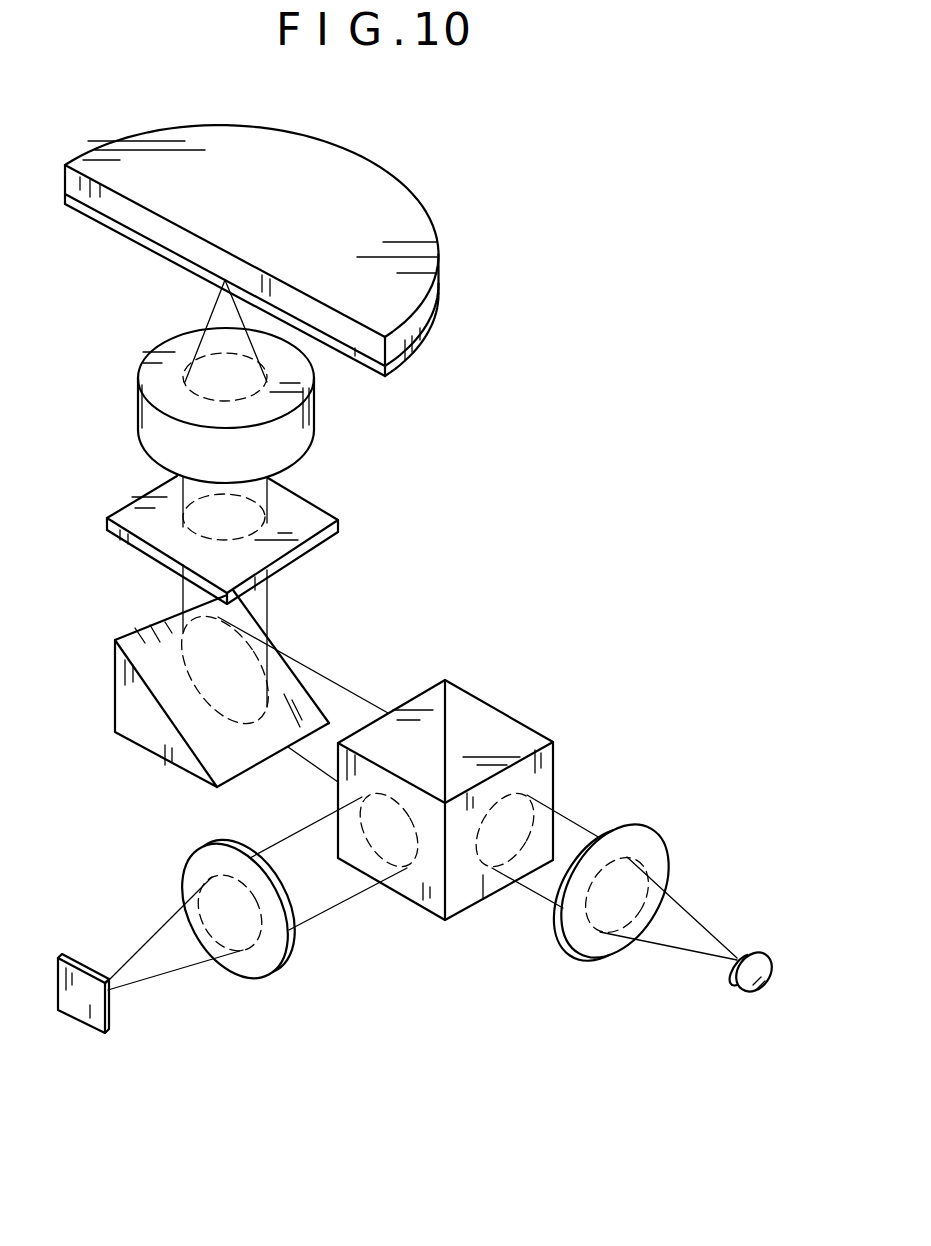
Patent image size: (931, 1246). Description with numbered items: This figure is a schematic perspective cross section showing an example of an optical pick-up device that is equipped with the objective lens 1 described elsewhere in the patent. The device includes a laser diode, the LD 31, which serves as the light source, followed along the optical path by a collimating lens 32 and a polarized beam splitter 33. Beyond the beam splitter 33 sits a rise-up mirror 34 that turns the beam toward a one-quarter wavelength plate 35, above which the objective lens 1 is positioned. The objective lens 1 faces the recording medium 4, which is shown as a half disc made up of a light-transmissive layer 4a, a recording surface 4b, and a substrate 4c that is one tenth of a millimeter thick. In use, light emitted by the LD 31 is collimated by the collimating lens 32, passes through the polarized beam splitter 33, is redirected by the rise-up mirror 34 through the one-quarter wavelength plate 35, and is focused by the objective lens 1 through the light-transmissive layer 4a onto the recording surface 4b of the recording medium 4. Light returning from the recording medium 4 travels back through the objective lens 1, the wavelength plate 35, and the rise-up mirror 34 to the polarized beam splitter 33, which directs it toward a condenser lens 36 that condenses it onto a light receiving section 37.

The recording medium 4 is at (287, 250).
The light-transmissive layer 4a is at (132, 238).
The recording surface 4b is at (190, 262).
The substrate 4c is at (378, 347).
The objective lens 1 is at (313, 432).
The ¼ wavelength plate 35 is at (317, 517).
The rise-up mirror 34 is at (122, 668).
The polarized beam splitter 33 is at (502, 723).
The collimating lens 32 is at (628, 823).
The LD (laser diode) 31 is at (735, 977).
The condenser lens 36 is at (290, 943).
The light receiving section 37 is at (100, 1023).